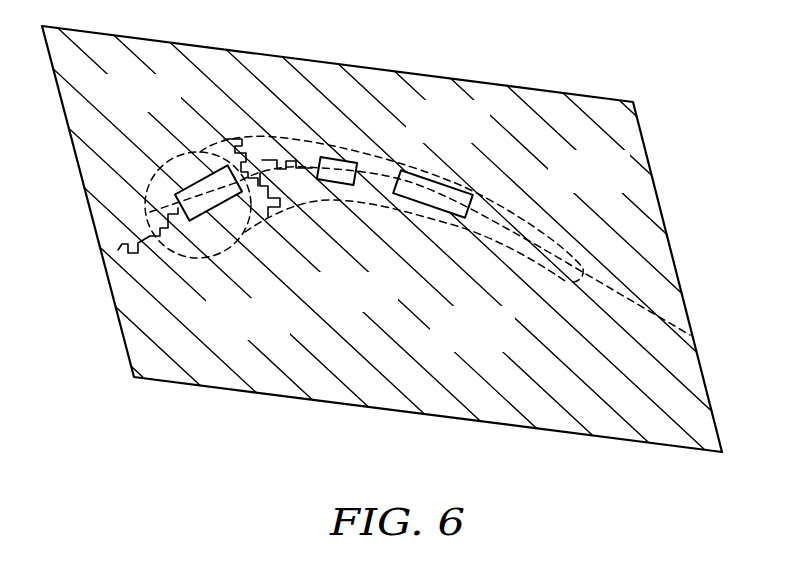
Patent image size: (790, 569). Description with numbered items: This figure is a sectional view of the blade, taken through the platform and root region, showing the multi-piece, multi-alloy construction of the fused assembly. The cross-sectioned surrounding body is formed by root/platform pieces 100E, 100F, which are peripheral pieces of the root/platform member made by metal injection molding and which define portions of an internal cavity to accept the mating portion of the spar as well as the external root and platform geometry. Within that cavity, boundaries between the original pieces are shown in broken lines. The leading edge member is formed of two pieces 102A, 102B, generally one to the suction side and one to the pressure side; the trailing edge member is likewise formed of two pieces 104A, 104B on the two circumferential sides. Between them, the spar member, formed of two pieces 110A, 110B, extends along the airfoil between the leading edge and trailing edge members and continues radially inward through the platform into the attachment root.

The root/platform piece 100E is at (604, 124).
The root/platform piece 100F is at (572, 385).
The leading edge member piece 102A is at (205, 160).
The leading edge member piece 102B is at (240, 204).
The trailing edge member piece 104A is at (548, 242).
The trailing edge member piece 104B is at (548, 271).
The spar member piece 110A is at (337, 151).
The spar member piece 110B is at (315, 195).